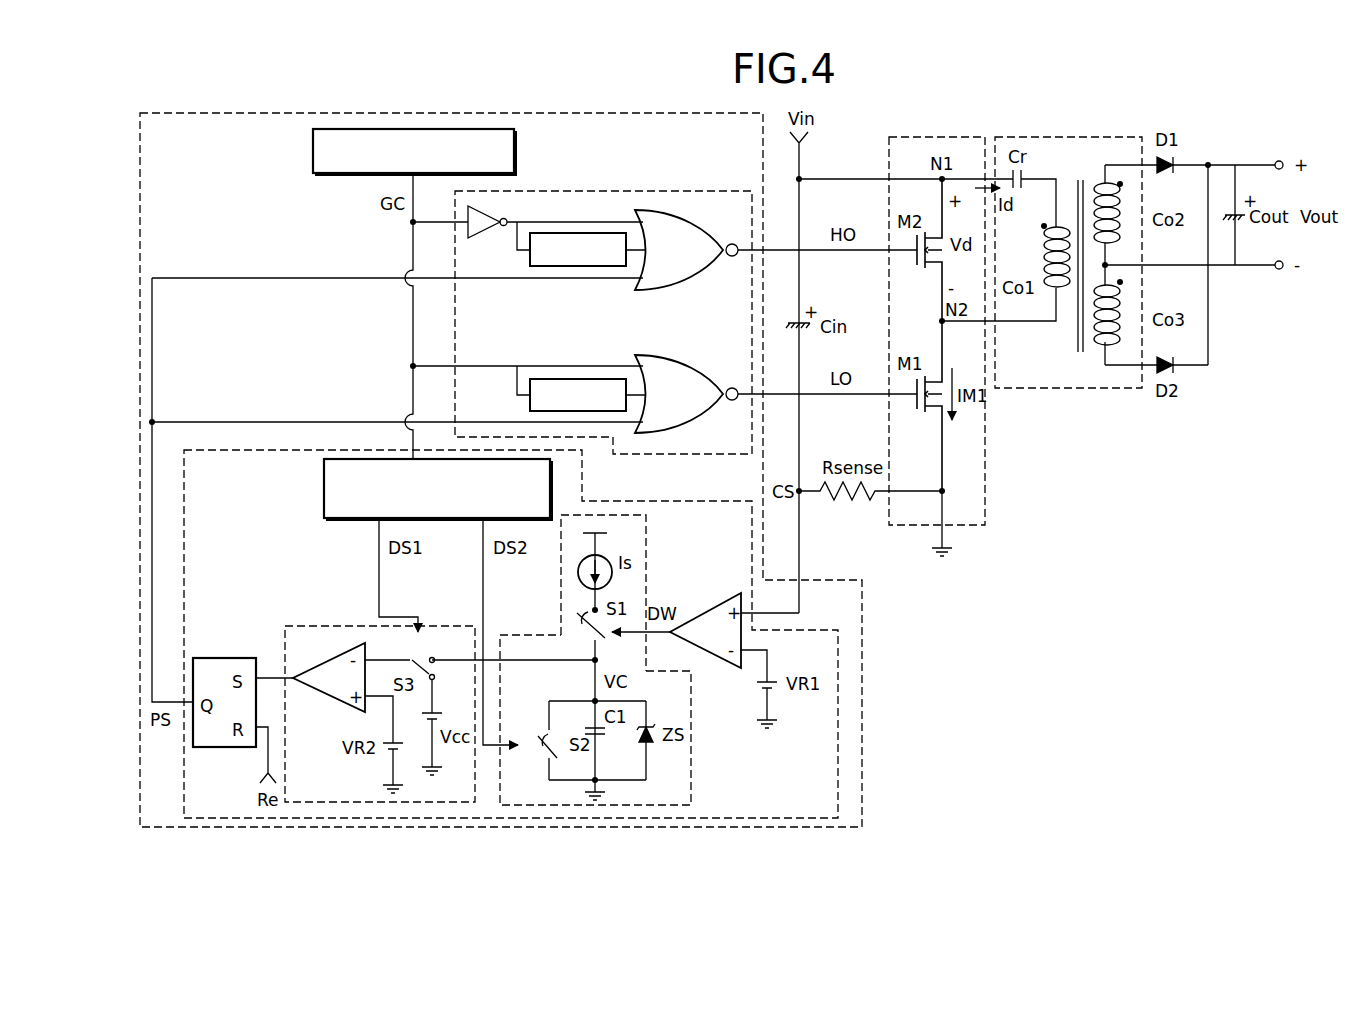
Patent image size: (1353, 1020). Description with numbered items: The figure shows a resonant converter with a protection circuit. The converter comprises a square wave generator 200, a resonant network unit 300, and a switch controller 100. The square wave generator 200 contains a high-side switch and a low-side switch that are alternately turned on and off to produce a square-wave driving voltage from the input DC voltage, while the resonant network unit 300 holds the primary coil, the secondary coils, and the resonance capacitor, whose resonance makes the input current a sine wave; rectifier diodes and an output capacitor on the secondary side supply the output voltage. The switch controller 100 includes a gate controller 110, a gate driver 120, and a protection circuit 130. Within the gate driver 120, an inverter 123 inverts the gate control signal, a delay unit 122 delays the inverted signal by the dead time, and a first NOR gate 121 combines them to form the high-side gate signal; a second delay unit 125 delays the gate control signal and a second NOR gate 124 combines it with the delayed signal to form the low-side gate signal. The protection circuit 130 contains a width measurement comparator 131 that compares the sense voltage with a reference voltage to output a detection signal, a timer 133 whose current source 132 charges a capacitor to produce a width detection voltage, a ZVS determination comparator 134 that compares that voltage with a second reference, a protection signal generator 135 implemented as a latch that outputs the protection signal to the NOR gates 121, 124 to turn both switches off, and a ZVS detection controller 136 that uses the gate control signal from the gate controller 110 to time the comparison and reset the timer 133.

The switch controller 100 is at (862, 658).
The gate controller 110 is at (514, 150).
The gate driver 120 is at (660, 191).
The first NOR gate 121 is at (680, 290).
The delay unit 122 is at (597, 266).
The inverter 123 is at (483, 238).
The second NOR gate 124 is at (657, 355).
The delay unit 125 is at (539, 377).
The protection circuit 130 is at (838, 733).
The width measurement comparator 131 is at (712, 608).
The current source 132 is at (579, 570).
The timer 133 is at (691, 765).
The ZVS determination comparator 134 is at (303, 625).
The protection signal generator 135 is at (215, 658).
The ZVS detection controller 136 is at (355, 518).
The square wave generator 200 is at (985, 488).
The resonant network unit 300 is at (1105, 388).